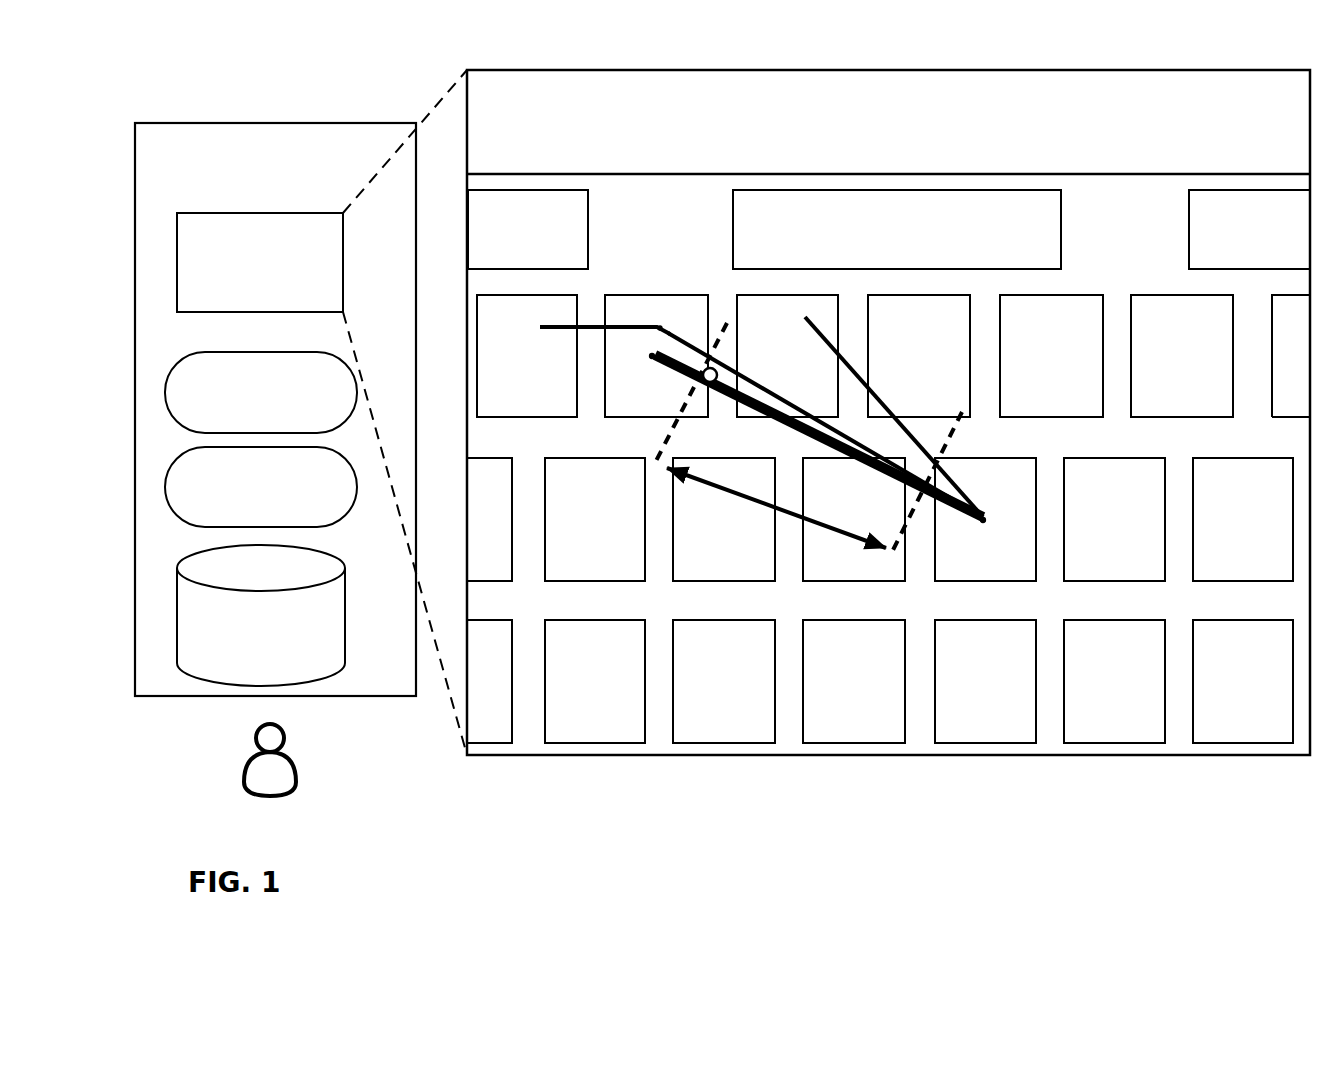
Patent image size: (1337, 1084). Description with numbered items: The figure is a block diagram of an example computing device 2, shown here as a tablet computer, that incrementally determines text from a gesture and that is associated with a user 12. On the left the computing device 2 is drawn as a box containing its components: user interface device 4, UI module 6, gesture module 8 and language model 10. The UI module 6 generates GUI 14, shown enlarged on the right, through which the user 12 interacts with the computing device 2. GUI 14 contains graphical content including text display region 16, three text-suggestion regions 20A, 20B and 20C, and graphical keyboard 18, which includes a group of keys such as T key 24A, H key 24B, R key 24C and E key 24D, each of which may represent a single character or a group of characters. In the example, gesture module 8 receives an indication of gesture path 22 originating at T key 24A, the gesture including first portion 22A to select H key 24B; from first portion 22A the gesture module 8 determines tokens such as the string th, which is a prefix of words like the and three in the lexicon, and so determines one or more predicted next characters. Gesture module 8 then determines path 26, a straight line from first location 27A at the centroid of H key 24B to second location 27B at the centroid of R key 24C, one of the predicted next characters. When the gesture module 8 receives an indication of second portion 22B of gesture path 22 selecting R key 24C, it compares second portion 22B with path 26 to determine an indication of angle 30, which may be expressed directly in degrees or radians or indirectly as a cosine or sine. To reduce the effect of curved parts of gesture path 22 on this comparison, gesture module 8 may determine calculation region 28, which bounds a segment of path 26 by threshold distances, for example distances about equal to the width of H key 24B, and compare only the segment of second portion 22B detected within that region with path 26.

The computing device 2 is at (275, 409).
The user interface device 4 is at (260, 262).
The UI module 6 is at (261, 392).
The gesture module 8 is at (261, 487).
The language model 10 is at (261, 615).
The user 12 is at (270, 789).
The graphical user interface 14 is at (622, 50).
The text display region 16 is at (858, 92).
The graphical keyboard 18 is at (888, 517).
The text-suggestion region 20A is at (565, 186).
The text-suggestion region 20B is at (860, 186).
The text-suggestion region 20C is at (1248, 186).
The gesture path 22 is at (565, 322).
The first portion of the gesture path 22A is at (822, 332).
The second portion of the gesture path 22B is at (846, 425).
The T key 24A is at (773, 290).
The H key 24B is at (1002, 455).
The R key 24C is at (638, 288).
The E key 24D is at (527, 421).
The path 26 is at (782, 425).
The first location 27A is at (983, 532).
The second location 27B is at (644, 357).
The calculation region 28 is at (792, 518).
The angle 30 is at (661, 314).